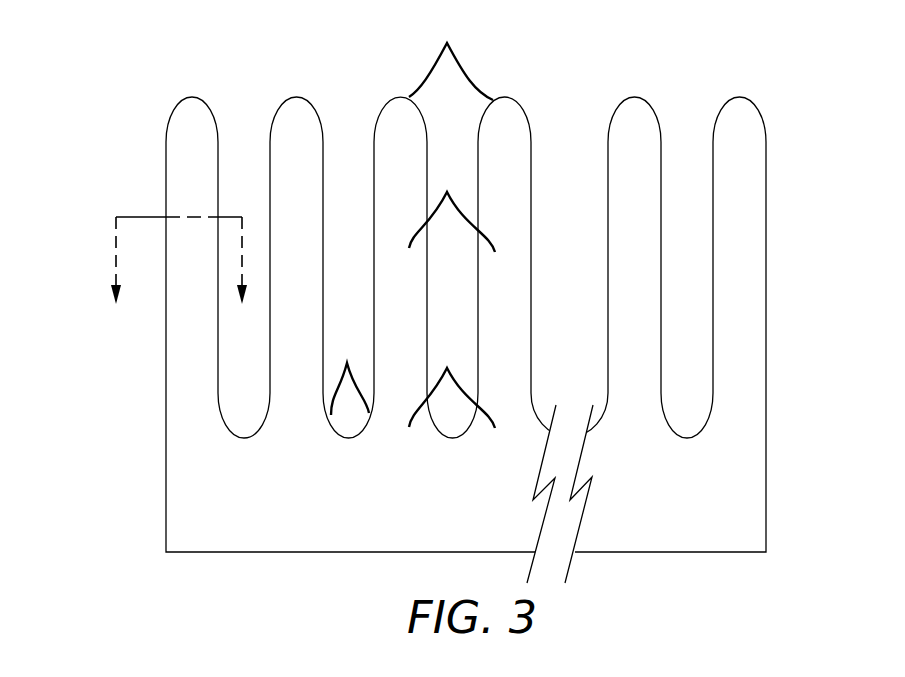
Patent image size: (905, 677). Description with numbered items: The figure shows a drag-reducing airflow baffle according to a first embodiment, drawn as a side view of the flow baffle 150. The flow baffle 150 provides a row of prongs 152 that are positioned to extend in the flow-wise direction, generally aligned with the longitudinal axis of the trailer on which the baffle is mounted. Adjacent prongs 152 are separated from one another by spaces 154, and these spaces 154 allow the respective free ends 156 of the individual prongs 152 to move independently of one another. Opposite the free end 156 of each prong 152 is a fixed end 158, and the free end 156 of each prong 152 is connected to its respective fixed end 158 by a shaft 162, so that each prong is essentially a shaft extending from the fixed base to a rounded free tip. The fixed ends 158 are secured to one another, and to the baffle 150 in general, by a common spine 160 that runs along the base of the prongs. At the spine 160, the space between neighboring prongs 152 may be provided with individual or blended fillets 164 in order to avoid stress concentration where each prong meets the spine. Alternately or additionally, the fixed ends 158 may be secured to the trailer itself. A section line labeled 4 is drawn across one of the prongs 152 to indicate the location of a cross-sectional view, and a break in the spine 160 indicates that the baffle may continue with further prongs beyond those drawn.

The flow baffle 150 is at (407, 297).
The prongs 152 is at (188, 133).
The spaces 154 is at (348, 106).
The free ends 156 is at (451, 55).
The fixed ends 158 is at (452, 383).
The common spine 160 is at (290, 504).
The shaft 162 is at (452, 206).
The fillets 164 is at (349, 373).
The section line 4- 4 is at (178, 278).